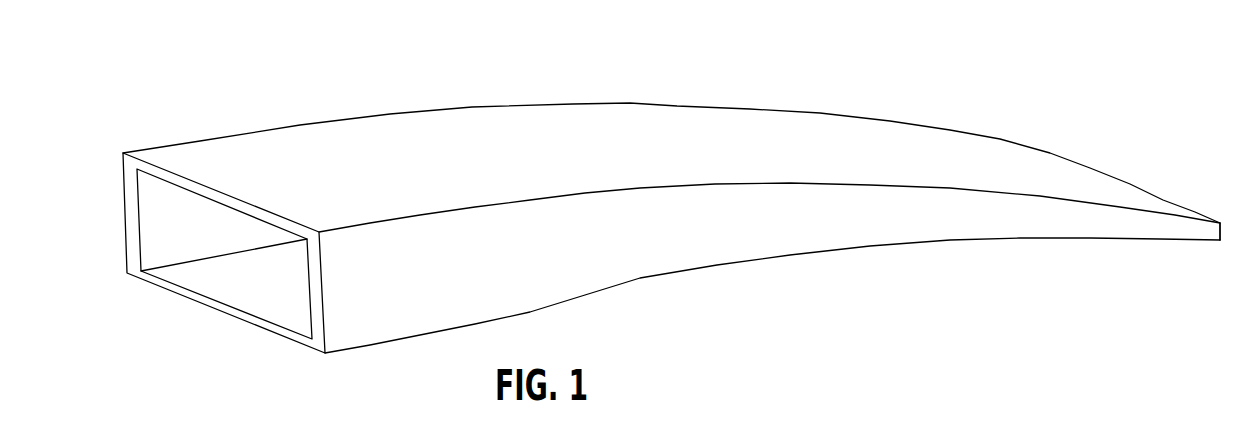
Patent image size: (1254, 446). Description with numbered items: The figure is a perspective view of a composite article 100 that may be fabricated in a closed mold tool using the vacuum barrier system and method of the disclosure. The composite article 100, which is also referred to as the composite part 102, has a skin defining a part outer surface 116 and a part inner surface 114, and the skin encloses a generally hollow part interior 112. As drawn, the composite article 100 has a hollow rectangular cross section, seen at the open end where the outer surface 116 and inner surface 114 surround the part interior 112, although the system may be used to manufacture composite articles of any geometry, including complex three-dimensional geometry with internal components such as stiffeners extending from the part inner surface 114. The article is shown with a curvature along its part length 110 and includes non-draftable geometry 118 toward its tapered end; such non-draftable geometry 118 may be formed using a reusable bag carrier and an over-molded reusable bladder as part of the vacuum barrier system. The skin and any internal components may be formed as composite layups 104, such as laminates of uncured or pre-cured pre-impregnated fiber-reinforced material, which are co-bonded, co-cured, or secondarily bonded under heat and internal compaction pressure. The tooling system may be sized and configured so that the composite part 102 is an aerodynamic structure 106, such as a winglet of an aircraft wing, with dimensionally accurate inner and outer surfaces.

The composite article 100 is at (677, 107).
The composite part 102 is at (573, 113).
The composite layups 104 is at (472, 107).
The aerodynamic structure 106 is at (820, 113).
The part length 110 is at (717, 265).
The part interior 112 is at (248, 277).
The part inner surface 114 is at (185, 279).
The part outer surface 116 is at (197, 162).
The non-draftable geometry 118 is at (1087, 240).